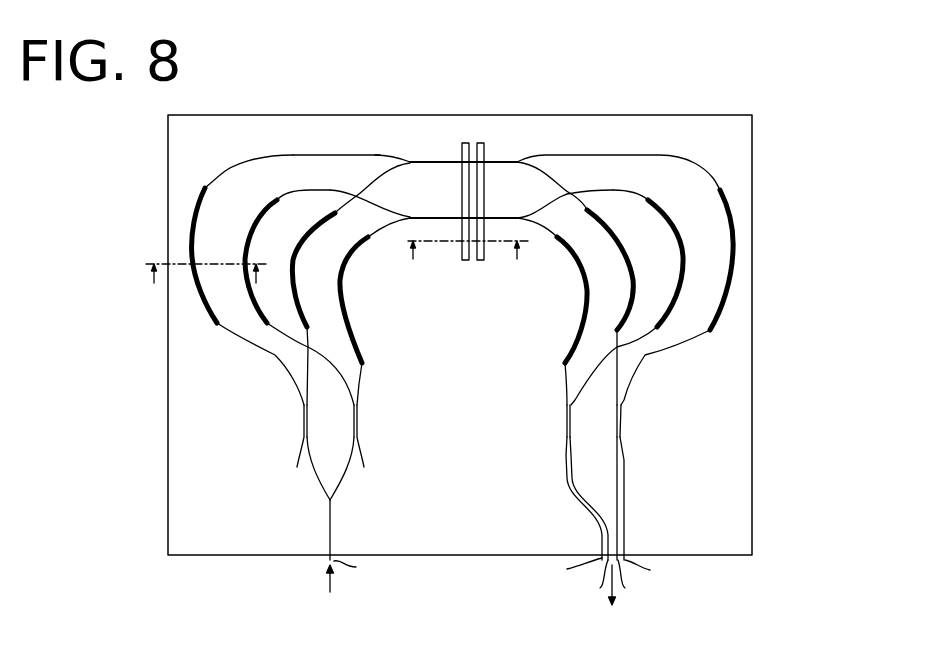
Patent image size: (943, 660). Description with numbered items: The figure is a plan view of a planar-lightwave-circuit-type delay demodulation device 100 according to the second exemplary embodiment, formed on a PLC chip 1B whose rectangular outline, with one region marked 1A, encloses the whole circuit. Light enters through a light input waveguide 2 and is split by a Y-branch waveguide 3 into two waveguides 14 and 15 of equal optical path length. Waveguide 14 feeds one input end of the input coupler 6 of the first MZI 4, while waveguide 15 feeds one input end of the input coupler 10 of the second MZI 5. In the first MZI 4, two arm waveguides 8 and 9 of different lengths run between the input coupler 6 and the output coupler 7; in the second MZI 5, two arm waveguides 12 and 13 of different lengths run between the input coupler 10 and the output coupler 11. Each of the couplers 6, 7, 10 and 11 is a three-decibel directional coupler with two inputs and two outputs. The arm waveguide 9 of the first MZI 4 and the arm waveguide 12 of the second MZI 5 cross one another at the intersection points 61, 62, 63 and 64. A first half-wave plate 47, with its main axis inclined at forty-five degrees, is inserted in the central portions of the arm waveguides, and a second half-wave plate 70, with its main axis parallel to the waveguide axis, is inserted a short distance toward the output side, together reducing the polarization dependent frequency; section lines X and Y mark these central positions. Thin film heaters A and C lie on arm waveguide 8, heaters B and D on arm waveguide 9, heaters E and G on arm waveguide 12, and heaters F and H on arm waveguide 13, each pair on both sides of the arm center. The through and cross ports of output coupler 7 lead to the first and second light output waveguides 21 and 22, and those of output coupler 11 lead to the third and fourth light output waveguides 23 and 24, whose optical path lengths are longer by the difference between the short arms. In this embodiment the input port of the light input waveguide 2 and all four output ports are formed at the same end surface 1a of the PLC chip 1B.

The planar-lightwave-circuit-type delay demodulation device 100 is at (508, 90).
The end surface 1a is at (415, 557).
The first region of substrate 1A is at (405, 157).
The PLC chip 1B is at (754, 258).
The light input waveguide 2 is at (333, 522).
The Y-branch waveguide 3 is at (318, 484).
The first MZI 4 is at (240, 267).
The second MZI 5 is at (547, 311).
The input coupler 6 is at (303, 417).
The output coupler 7 is at (646, 482).
The arm waveguide 8 is at (290, 155).
The arm waveguide 9 is at (390, 173).
The input coupler 10 is at (357, 420).
The output coupler 11 is at (569, 482).
The arm waveguide 12 is at (274, 243).
The arm waveguide 13 is at (367, 373).
The waveguide 14 is at (317, 472).
The waveguide 15 is at (342, 472).
The first light output waveguide 21 is at (625, 463).
The second light output waveguide 22 is at (618, 490).
The third light output waveguide 23 is at (574, 453).
The fourth light output waveguide 24 is at (567, 473).
The first half-wave plate 47 is at (461, 263).
The second half-wave plate 70 is at (479, 262).
The intersection point 61 is at (357, 192).
The intersection point 62 is at (308, 347).
The intersection point 63 is at (570, 193).
The intersection point 64 is at (617, 348).
The heater A is at (200, 323).
The heater B is at (298, 247).
The heater C is at (722, 325).
The heater D is at (622, 250).
The heater E is at (252, 215).
The heater F is at (343, 290).
The heater G is at (673, 225).
The heater H is at (583, 290).
The section line X- X is at (205, 278).
The section line Y- Y is at (465, 254).